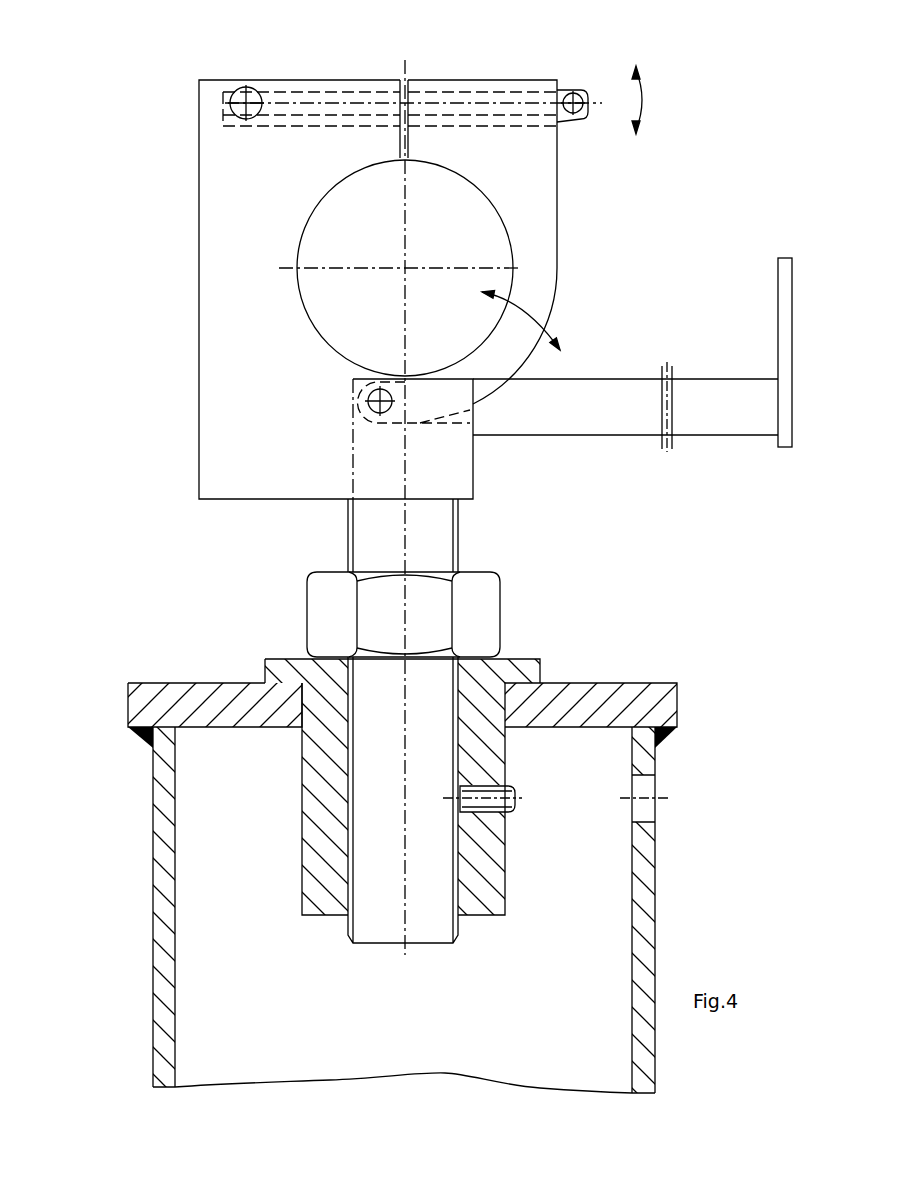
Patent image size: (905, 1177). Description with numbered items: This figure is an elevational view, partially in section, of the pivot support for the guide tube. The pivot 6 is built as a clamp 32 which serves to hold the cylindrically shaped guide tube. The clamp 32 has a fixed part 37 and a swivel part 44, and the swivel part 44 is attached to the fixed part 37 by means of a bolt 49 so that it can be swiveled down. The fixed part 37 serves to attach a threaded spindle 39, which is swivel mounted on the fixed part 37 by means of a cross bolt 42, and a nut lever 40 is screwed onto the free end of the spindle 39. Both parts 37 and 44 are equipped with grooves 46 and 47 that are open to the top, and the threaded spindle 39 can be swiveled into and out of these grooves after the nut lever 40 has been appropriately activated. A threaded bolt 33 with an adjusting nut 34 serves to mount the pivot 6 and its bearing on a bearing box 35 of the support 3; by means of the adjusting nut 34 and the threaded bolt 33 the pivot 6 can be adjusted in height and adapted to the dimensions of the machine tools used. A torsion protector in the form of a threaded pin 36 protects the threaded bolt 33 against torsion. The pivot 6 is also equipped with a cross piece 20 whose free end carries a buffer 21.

The support 3 is at (610, 700).
The pivot 6 is at (588, 329).
The cross piece 20 is at (710, 395).
The buffer 21 is at (785, 299).
The clamp 32 is at (385, 60).
The threaded bolt 33 is at (434, 517).
The adjusting nut 34 is at (477, 620).
The bearing box 35 is at (450, 252).
The threaded pin 36 is at (485, 802).
The fixed part 37 is at (232, 391).
The threaded spindle 39 is at (510, 102).
The nut lever 40 is at (587, 102).
The cross bolt 42 is at (246, 98).
The swivel part 44 is at (543, 254).
The groove 46 is at (318, 90).
The groove 47 is at (462, 89).
The bolt 49 is at (392, 407).